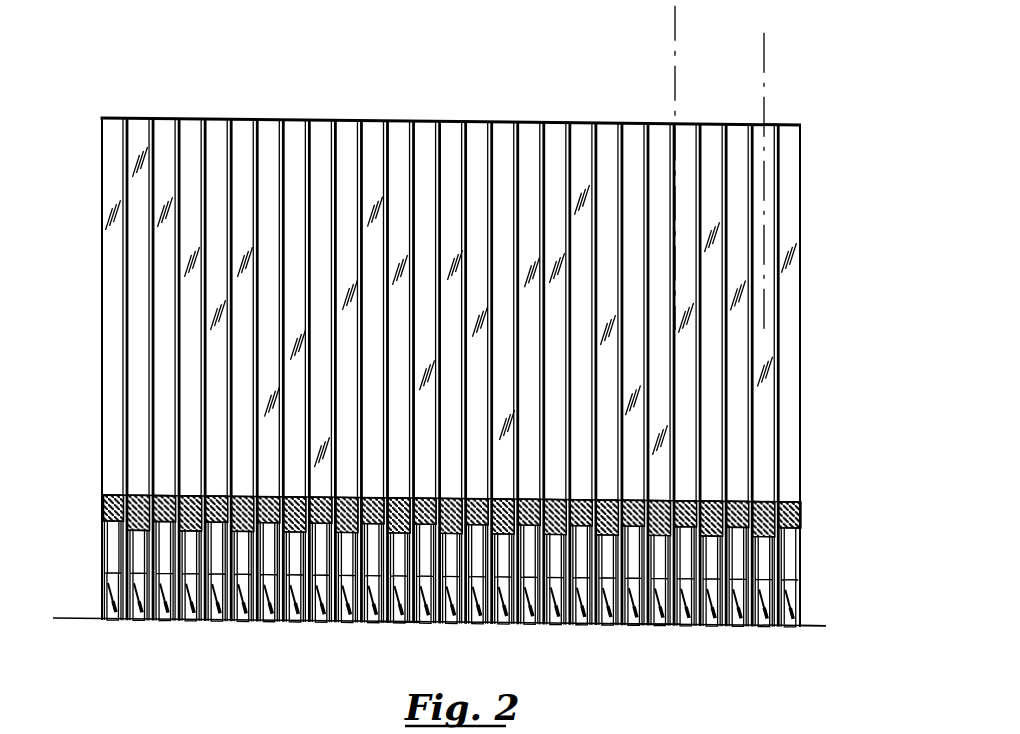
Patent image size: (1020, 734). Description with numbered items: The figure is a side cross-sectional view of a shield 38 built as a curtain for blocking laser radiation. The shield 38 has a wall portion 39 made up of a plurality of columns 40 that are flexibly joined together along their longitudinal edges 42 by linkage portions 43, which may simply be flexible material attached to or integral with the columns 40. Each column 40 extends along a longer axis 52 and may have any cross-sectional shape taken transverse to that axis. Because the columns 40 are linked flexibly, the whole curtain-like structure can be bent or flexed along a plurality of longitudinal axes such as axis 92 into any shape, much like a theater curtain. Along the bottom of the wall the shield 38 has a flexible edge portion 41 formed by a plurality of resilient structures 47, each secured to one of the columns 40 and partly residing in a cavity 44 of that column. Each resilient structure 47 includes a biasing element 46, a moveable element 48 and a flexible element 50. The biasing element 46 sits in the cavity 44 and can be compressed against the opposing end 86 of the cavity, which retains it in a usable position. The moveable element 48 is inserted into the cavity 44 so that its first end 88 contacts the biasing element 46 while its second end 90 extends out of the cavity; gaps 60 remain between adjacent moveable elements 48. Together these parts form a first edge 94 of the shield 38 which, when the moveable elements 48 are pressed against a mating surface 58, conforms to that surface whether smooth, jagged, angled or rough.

The shield 38 is at (290, 88).
The wall portion 39 is at (96, 371).
The columns 40 is at (800, 301).
The flexible edge portion 41 is at (90, 516).
The longitudinal edges 42 is at (777, 185).
The linkage portions 43 is at (777, 215).
The cavity 44 is at (102, 546).
The biasing element 46 is at (800, 501).
The resilient structures 47 is at (873, 492).
The moveable element 48 is at (797, 583).
The flexible element 50 is at (397, 624).
The longer axis 52 is at (768, 53).
The mating surface 58 is at (803, 621).
The gaps 60 is at (618, 618).
The opposing end of cavity 86 is at (788, 489).
The first end of moveable element 88 is at (801, 523).
The second end of moveable element 90 is at (797, 606).
The longitudinal axis 92 is at (678, 33).
The first edge 94 is at (100, 611).